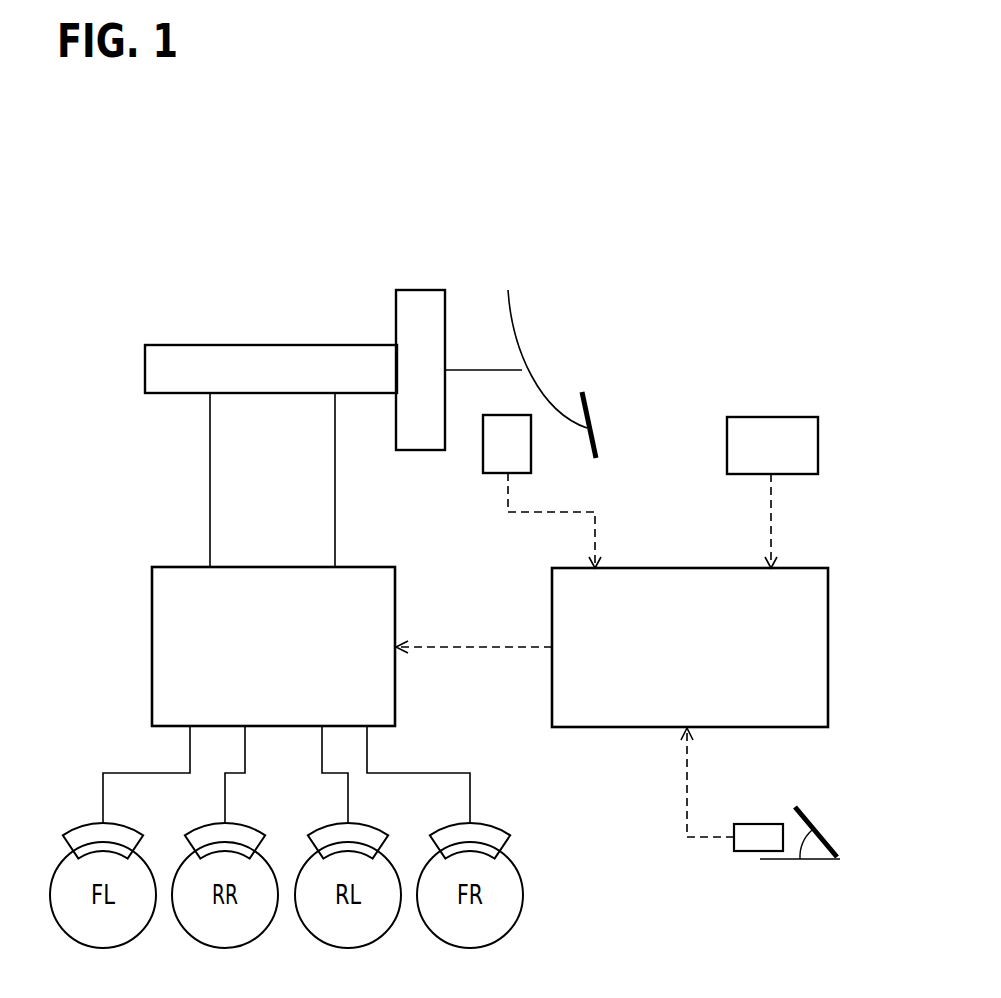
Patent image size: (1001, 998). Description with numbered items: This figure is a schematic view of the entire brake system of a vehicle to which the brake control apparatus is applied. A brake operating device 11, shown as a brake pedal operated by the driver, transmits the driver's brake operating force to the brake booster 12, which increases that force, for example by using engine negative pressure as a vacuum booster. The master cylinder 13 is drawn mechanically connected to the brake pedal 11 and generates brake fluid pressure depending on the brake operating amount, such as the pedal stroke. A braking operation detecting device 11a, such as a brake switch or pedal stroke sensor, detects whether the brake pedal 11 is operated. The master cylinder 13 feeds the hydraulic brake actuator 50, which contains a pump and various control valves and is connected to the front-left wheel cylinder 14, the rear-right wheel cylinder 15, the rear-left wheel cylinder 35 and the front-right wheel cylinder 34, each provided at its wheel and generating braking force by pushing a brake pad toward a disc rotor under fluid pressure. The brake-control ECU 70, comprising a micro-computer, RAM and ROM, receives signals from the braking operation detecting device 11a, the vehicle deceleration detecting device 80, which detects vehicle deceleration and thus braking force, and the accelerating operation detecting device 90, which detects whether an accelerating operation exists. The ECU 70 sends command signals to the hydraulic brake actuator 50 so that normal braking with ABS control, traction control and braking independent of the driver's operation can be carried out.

The brake operating device 11 is at (583, 392).
The braking operation detecting device 11a is at (483, 458).
The brake booster 12 is at (420, 290).
The master cylinder 13 is at (270, 345).
The front-left (FL) wheel cylinder 14 is at (82, 823).
The rear-right (RR) wheel cylinder 15 is at (204, 823).
The front-right (FR) wheel cylinder 34 is at (493, 823).
The rear-left (RL) wheel cylinder 35 is at (373, 823).
The hydraulic brake actuator 50 is at (152, 648).
The brake-control ECU 70 is at (828, 647).
The vehicle deceleration detecting device 80 is at (773, 417).
The accelerating operation detecting device 90 is at (758, 824).